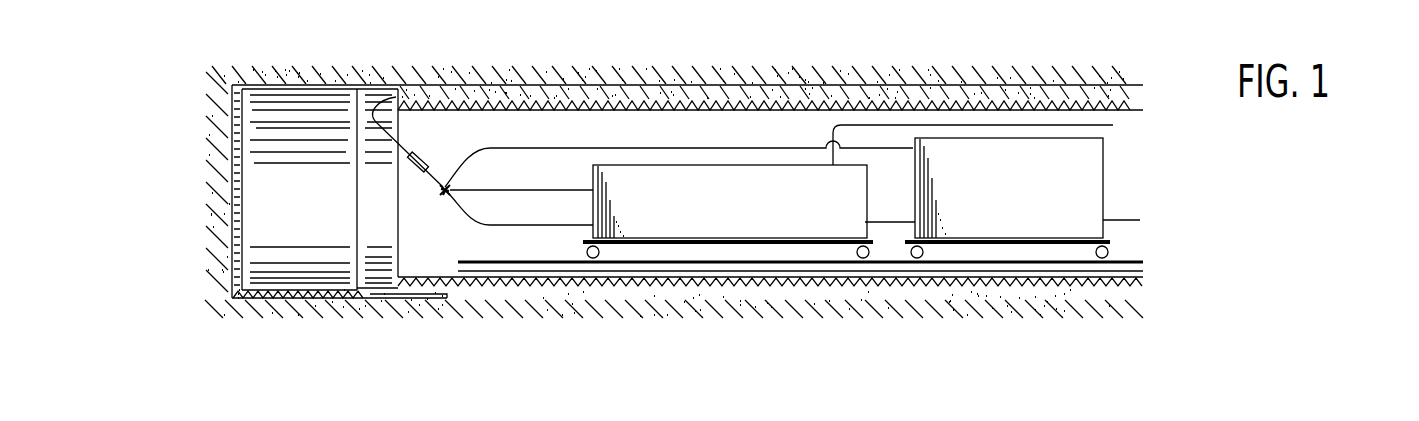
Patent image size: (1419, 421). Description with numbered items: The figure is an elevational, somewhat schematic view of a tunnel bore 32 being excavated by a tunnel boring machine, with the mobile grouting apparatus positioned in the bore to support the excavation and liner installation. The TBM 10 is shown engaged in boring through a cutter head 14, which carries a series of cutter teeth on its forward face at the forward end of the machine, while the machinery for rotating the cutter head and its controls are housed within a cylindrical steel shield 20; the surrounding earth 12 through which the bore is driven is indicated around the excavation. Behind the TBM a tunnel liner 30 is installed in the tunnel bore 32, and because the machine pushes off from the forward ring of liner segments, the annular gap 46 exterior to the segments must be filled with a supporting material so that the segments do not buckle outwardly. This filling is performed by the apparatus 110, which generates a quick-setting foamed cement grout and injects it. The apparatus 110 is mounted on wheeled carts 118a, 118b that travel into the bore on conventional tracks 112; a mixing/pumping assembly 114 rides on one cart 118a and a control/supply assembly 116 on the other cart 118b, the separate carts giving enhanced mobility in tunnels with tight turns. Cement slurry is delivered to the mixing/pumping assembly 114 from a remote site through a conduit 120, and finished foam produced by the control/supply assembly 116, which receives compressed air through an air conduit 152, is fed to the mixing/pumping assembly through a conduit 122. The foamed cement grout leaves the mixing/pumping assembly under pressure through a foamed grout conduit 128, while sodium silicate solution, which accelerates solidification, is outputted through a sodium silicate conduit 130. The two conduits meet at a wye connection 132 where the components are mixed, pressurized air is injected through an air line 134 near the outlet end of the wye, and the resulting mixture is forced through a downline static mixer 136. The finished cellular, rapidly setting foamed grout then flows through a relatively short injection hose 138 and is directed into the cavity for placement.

The tunnel boring machine 10 is at (271, 64).
The earth 12 is at (184, 181).
The cutter head 14 is at (228, 204).
The cylindrical steel shield 20 is at (313, 231).
The tunnel liner 30 is at (1138, 113).
The tunnel bore 32 is at (1138, 90).
The annular gap 46 is at (705, 82).
The apparatus 110 is at (1137, 165).
The tracks 112 is at (1120, 262).
The mixing/pumping assembly 114 is at (741, 213).
The control/supply assembly 116 is at (1028, 200).
The cart 118a is at (768, 246).
The cart 118b is at (1038, 246).
The conduit 120 is at (1113, 125).
The conduit 122 is at (878, 222).
The foamed grout conduit 128 is at (510, 225).
The sodium silicate conduit 130 is at (503, 190).
The wye connection 132 is at (443, 194).
The air line 134 is at (602, 148).
The static mixer 136 is at (428, 160).
The injection hose 138 is at (377, 128).
The air conduit 152 is at (1123, 220).